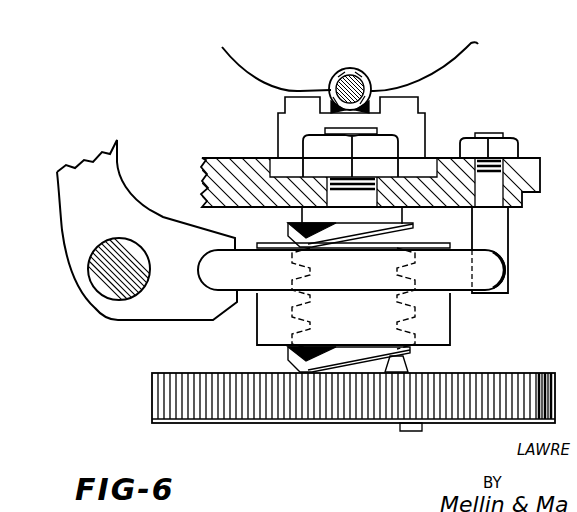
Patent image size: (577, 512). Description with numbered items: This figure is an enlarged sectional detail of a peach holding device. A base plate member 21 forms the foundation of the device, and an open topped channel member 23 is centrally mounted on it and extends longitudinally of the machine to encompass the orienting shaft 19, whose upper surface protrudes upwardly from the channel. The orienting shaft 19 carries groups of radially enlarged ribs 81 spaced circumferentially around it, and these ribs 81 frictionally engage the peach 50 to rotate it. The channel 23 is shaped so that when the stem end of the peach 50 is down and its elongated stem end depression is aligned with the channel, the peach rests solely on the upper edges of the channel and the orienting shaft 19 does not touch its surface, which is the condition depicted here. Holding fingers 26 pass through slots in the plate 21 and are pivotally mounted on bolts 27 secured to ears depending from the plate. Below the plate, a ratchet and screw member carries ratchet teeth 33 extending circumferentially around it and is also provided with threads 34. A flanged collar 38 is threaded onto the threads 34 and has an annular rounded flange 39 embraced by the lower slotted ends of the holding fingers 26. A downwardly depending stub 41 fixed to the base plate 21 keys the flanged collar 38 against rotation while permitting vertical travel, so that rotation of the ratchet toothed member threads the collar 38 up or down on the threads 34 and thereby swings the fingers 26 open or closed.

The peach 50 is at (479, 46).
The radially enlarged ribs 81 is at (352, 69).
The orienting shaft 19 is at (360, 82).
The open topped channel member 23 is at (382, 93).
The base plate member 21 is at (535, 173).
The downwardly depending stub 41 is at (506, 234).
The holding fingers 26 is at (62, 217).
The bolts 27 is at (114, 299).
The annular rounded flange 39 is at (210, 291).
The flanged collar 38 is at (444, 331).
The threads 34 is at (297, 361).
The ratchet teeth 33 is at (152, 400).